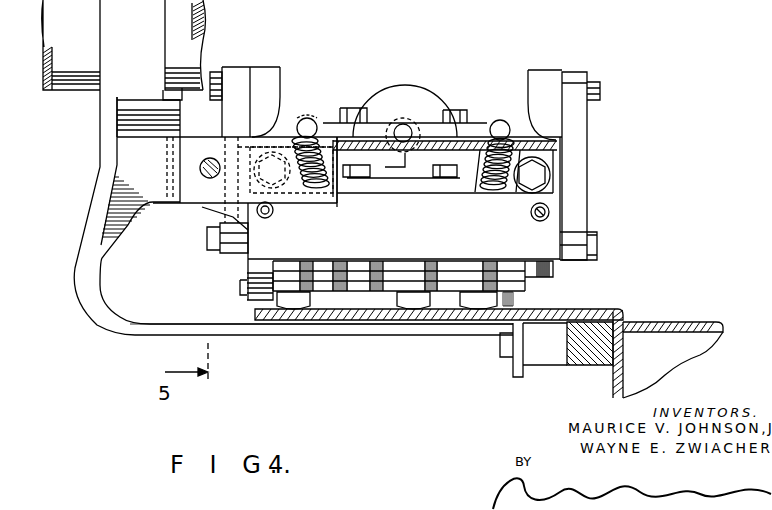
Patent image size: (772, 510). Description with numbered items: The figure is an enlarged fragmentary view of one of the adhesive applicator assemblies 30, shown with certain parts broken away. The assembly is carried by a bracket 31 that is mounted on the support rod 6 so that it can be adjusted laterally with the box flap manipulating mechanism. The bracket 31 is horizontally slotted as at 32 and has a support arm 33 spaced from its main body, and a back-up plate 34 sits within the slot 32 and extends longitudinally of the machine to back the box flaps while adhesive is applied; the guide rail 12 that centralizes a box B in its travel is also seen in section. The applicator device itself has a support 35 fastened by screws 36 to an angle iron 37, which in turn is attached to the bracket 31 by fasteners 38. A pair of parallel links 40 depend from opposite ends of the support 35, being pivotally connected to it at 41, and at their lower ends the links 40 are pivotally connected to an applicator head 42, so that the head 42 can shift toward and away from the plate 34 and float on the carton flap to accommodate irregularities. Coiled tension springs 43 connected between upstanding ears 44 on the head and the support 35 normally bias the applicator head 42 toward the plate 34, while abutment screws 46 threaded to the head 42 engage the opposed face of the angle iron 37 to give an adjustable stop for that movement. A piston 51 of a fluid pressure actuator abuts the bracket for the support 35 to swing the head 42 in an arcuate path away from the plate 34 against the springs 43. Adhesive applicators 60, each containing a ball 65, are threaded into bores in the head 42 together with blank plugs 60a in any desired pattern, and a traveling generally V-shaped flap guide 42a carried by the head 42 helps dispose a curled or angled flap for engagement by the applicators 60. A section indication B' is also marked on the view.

The support rod 6 is at (70, 77).
The guide rail 12 is at (582, 360).
The adhesive applicator assembly 30 is at (592, 222).
The bracket 31 is at (108, 140).
The slot 32 is at (120, 293).
The support arm 33 is at (322, 333).
The back-up plate 34 is at (400, 322).
The support 35 is at (545, 90).
The screw 36 is at (463, 110).
The angle iron 37 is at (430, 142).
The fastener 38 is at (202, 180).
The parallel link 40 is at (232, 115).
The pivotal connection 41 is at (216, 72).
The applicator head 42 is at (552, 195).
The traveling flap guide 42a is at (248, 270).
The coiled tension spring 43 is at (330, 185).
The upstanding ear 44 is at (482, 190).
The abutment screw 46 is at (537, 173).
The piston 51 is at (403, 124).
The adhesive applicator 60 is at (342, 303).
The blank plug 60a is at (552, 268).
The ball 65 is at (287, 320).
The box B is at (639, 361).
The section line B' is at (619, 297).